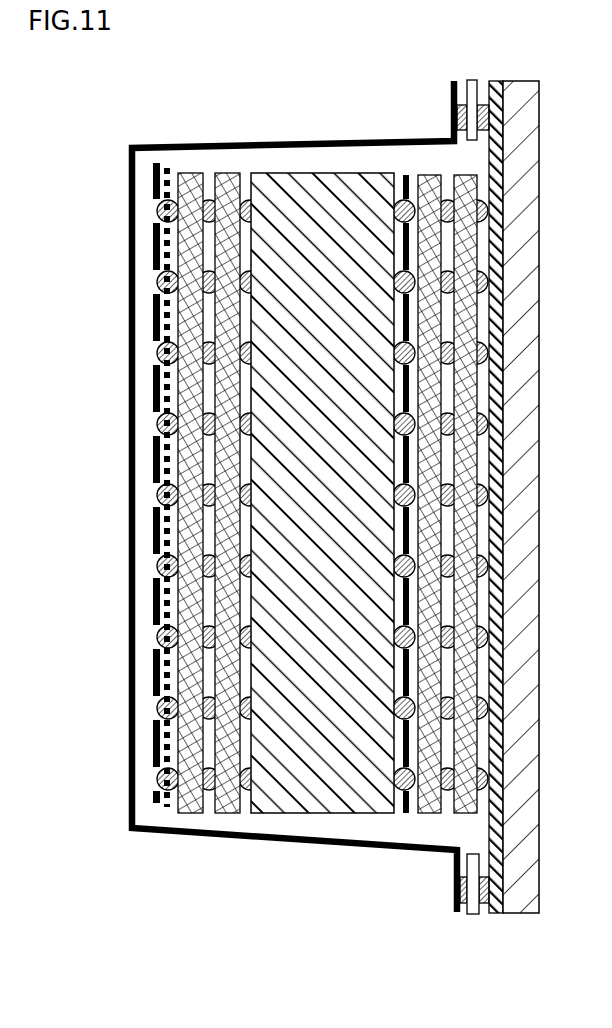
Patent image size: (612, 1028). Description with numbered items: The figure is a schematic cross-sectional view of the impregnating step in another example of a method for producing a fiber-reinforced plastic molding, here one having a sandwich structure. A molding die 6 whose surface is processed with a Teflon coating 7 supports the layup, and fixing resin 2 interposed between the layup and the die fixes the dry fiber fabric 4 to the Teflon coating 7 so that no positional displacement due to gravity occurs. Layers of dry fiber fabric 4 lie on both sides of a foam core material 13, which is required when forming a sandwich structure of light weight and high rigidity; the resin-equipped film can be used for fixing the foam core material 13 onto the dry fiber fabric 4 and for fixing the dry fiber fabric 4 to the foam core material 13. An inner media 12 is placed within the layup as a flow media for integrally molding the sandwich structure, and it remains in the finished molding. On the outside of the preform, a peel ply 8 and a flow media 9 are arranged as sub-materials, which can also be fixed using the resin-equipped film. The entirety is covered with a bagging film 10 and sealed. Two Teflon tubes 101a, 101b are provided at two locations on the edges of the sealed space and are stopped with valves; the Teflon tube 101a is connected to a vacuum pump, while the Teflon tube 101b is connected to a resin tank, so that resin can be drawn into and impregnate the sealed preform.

The fixing resin 2 is at (242, 194).
The dry fiber fabric 4 is at (197, 802).
The molding die 6 is at (540, 480).
The Teflon coating 7 is at (495, 90).
The peel ply 8 is at (167, 163).
The flow media 9 is at (153, 163).
The bagging film 10 is at (130, 470).
The inner media 12 is at (405, 175).
The foam core material 13 is at (327, 800).
The Teflon tube 101a is at (472, 90).
The Teflon tube 101b is at (478, 904).